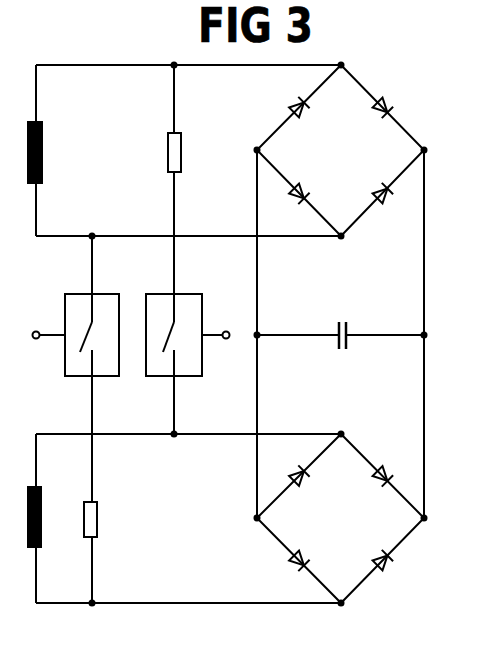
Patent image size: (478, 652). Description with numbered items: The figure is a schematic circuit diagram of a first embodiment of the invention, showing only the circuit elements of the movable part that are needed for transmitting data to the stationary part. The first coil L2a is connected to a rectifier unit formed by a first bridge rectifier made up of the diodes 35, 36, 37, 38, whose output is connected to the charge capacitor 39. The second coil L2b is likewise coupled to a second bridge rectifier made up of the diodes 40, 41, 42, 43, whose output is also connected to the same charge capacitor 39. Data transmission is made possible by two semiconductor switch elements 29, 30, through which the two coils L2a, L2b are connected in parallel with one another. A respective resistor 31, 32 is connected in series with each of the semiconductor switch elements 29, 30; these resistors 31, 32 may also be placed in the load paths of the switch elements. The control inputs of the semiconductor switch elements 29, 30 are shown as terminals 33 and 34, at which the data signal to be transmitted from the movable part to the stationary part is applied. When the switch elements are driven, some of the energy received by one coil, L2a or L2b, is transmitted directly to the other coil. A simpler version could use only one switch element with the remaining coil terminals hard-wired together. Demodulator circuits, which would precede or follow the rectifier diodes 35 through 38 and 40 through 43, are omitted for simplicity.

The first coil L2a is at (59, 152).
The second coil L2b is at (43, 499).
The semiconductor switch element 29 is at (77, 294).
The semiconductor switch element 30 is at (196, 294).
The resistor 31 is at (191, 152).
The resistor 32 is at (106, 521).
The control input 33 is at (45, 356).
The control input 34 is at (220, 356).
The diode 35 is at (286, 112).
The diode 36 is at (393, 114).
The diode 37 is at (286, 191).
The diode 38 is at (390, 201).
The charge capacitor 39 is at (340, 356).
The diode 40 is at (300, 469).
The diode 41 is at (387, 461).
The diode 42 is at (280, 569).
The diode 43 is at (397, 574).